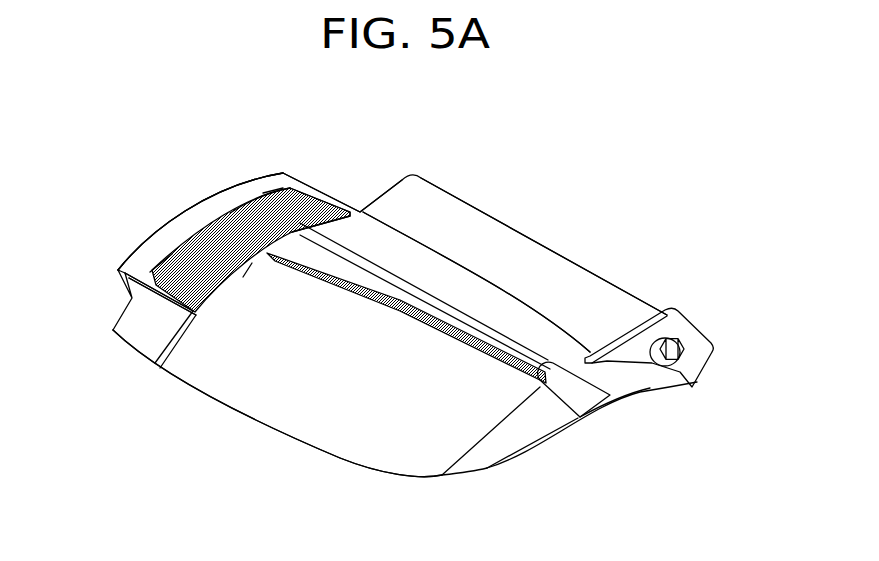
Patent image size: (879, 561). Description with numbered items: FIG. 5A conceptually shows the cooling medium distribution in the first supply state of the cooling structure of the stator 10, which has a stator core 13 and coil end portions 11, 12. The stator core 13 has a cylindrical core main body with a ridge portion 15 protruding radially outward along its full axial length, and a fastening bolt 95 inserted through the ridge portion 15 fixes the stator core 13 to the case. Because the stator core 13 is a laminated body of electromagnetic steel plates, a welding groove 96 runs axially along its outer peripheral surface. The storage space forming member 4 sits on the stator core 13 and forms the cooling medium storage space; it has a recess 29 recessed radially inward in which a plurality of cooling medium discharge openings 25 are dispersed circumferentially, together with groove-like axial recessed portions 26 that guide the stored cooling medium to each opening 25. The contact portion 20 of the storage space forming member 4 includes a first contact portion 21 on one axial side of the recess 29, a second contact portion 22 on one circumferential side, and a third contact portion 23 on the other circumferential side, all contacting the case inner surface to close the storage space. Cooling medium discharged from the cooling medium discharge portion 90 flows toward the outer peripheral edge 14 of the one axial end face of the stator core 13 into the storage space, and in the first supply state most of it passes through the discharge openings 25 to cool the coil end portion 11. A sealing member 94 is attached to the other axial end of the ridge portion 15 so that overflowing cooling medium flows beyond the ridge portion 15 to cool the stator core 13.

The storage space forming member 4 is at (176, 212).
The stator 10 is at (562, 242).
The coil end portion 11 is at (127, 317).
The coil end portion 12 is at (540, 443).
The stator core 13 is at (232, 387).
The outer peripheral edge 14 is at (357, 211).
The ridge portion 15 is at (507, 240).
The contact portion 20 is at (204, 219).
The first contact portion 21 is at (197, 215).
The second contact portion 22 is at (152, 277).
The third contact portion 23 is at (310, 192).
The cooling medium discharge opening 25 is at (282, 188).
The recessed portion 26 is at (243, 277).
The recess 29 is at (243, 205).
The cooling medium discharge portion 90 is at (562, 367).
The sealing member 94 is at (648, 318).
The fastening bolt 95 is at (679, 355).
The welding groove 96 is at (351, 268).